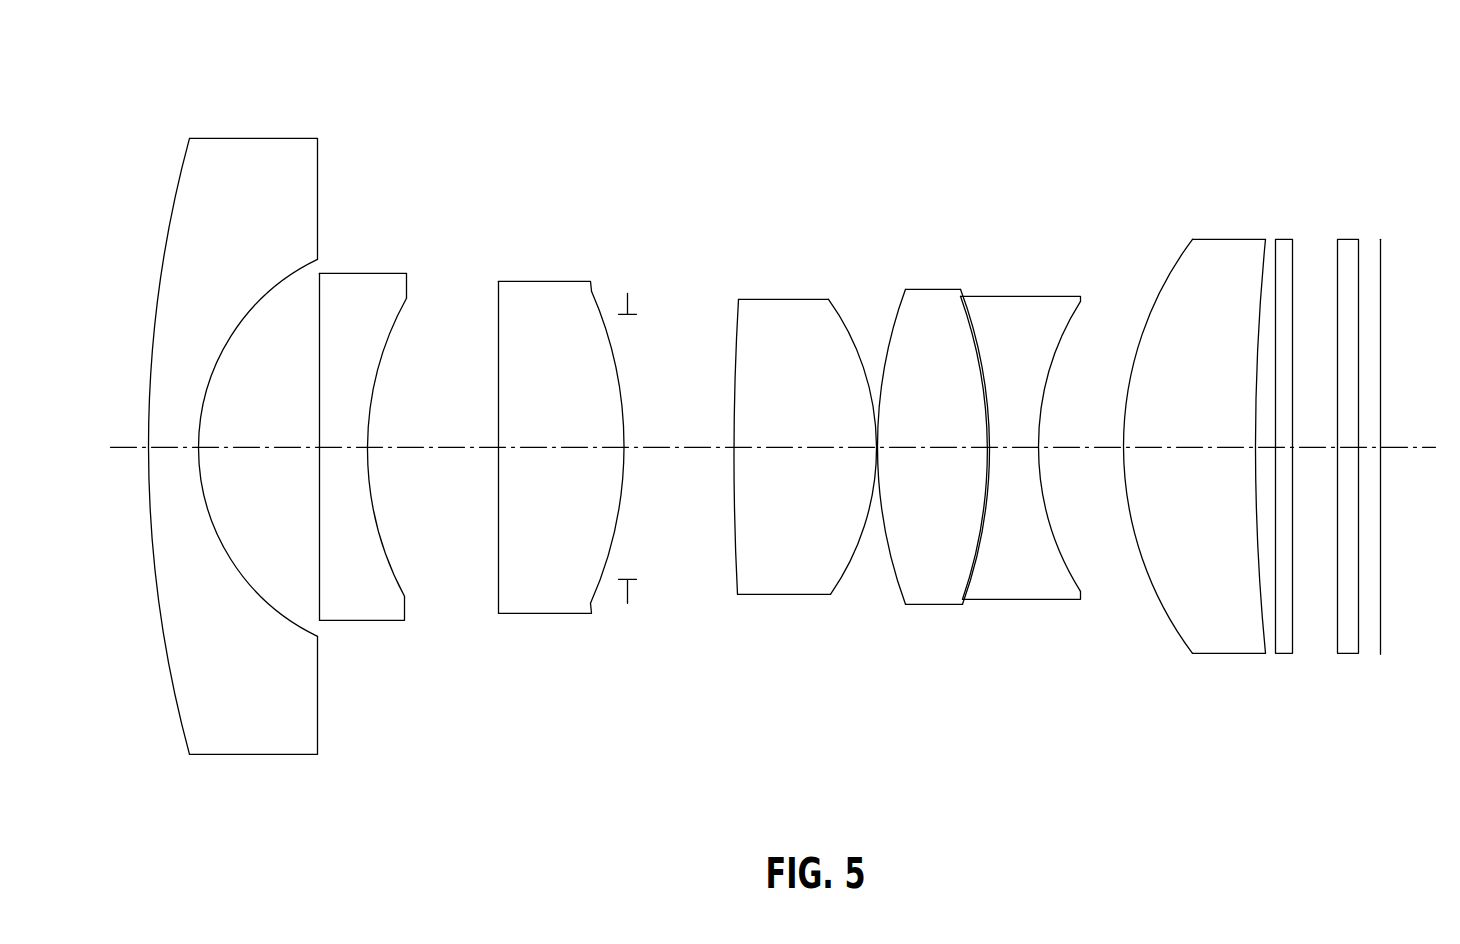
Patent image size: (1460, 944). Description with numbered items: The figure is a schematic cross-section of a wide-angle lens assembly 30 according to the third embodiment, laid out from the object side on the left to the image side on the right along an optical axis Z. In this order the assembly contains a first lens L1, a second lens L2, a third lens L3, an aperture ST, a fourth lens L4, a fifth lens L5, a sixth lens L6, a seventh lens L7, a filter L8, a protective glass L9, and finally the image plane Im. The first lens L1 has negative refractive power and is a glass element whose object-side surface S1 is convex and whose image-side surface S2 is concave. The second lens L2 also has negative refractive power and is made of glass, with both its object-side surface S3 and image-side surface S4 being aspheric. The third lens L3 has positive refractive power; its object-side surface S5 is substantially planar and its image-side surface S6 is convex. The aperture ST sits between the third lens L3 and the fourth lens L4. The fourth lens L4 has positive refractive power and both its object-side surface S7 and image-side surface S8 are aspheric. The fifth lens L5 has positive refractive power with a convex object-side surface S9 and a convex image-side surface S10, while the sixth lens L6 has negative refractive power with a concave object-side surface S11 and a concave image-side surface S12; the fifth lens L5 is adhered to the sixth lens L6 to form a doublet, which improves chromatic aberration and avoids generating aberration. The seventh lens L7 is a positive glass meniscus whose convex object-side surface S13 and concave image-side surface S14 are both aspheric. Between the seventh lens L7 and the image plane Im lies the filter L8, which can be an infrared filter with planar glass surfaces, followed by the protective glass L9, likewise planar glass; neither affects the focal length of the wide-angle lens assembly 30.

The wide-angle lens assembly 30 is at (172, 150).
The first lens L1 is at (225, 444).
The second lens L2 is at (436, 470).
The third lens L3 is at (600, 467).
The aperture ST is at (627, 292).
The fourth lens L4 is at (800, 464).
The fifth lens L5 is at (993, 473).
The sixth lens L6 is at (1081, 474).
The seventh lens L7 is at (1250, 463).
The filter L8 is at (1283, 257).
The protective glass L9 is at (1346, 257).
The image plane Im is at (1380, 238).
The optical axis Z is at (762, 448).
The object-side surface of the first lens S1 is at (167, 653).
The image-side surface of the first lens S2 is at (267, 602).
The object-side surface of the second lens S3 is at (323, 593).
The image-side surface of the second lens S4 is at (390, 563).
The object-side surface of the third lens S5 is at (500, 573).
The image-side surface of the third lens S6 is at (612, 547).
The object-side surface of the fourth lens S7 is at (735, 548).
The image-side surface of the fourth lens S8 is at (847, 567).
The object-side surface of the fifth lens S9 is at (890, 552).
The image-side surface of the fifth lens S10 is at (983, 528).
The object-side surface of the sixth lens S11 is at (983, 528).
The image-side surface of the sixth lens S12 is at (1057, 553).
The object-side surface of the seventh lens S13 is at (1155, 595).
The image-side surface of the seventh lens S14 is at (1257, 515).